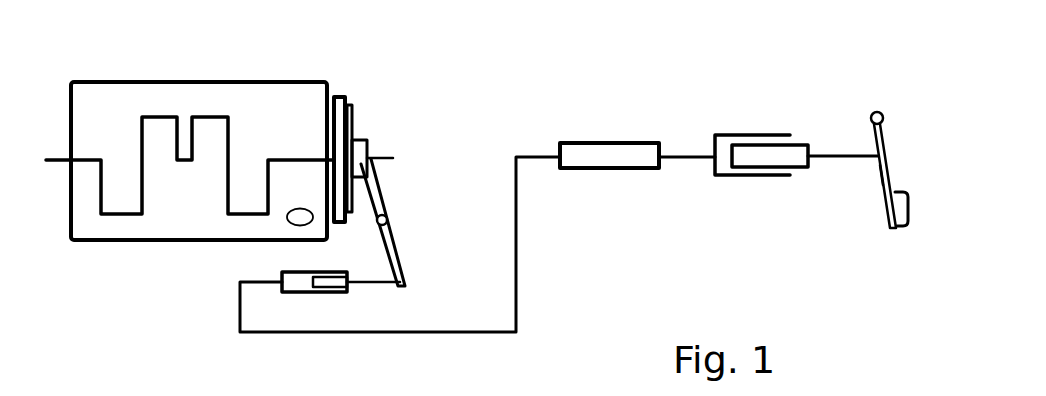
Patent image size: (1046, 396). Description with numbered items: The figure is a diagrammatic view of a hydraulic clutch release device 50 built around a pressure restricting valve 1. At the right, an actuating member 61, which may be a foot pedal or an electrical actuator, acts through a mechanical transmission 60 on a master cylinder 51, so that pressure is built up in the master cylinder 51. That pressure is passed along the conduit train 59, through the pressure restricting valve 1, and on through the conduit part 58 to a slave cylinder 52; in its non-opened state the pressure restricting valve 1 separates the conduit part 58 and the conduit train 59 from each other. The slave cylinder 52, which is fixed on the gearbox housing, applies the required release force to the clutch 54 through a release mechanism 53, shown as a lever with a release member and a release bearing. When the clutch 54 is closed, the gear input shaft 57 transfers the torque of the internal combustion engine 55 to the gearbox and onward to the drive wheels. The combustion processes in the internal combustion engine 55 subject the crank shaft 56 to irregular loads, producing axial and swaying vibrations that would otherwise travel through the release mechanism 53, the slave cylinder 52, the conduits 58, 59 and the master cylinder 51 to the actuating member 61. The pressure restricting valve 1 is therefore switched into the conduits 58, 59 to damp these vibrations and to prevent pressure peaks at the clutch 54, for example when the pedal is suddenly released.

The pressure restricting valve 1 is at (601, 150).
The clutch release device 50 is at (897, 135).
The master cylinder 51 is at (760, 181).
The slave cylinder 52 is at (311, 297).
The release mechanism 53 is at (392, 205).
The clutch 54 is at (362, 96).
The internal combustion engine 55 is at (281, 106).
The crank shaft 56 is at (140, 157).
The gear input shaft 57 is at (385, 157).
The conduit part 58 is at (516, 254).
The conduit train 59 is at (686, 155).
The mechanical transmission 60 is at (842, 150).
The actuating member 61 is at (882, 172).